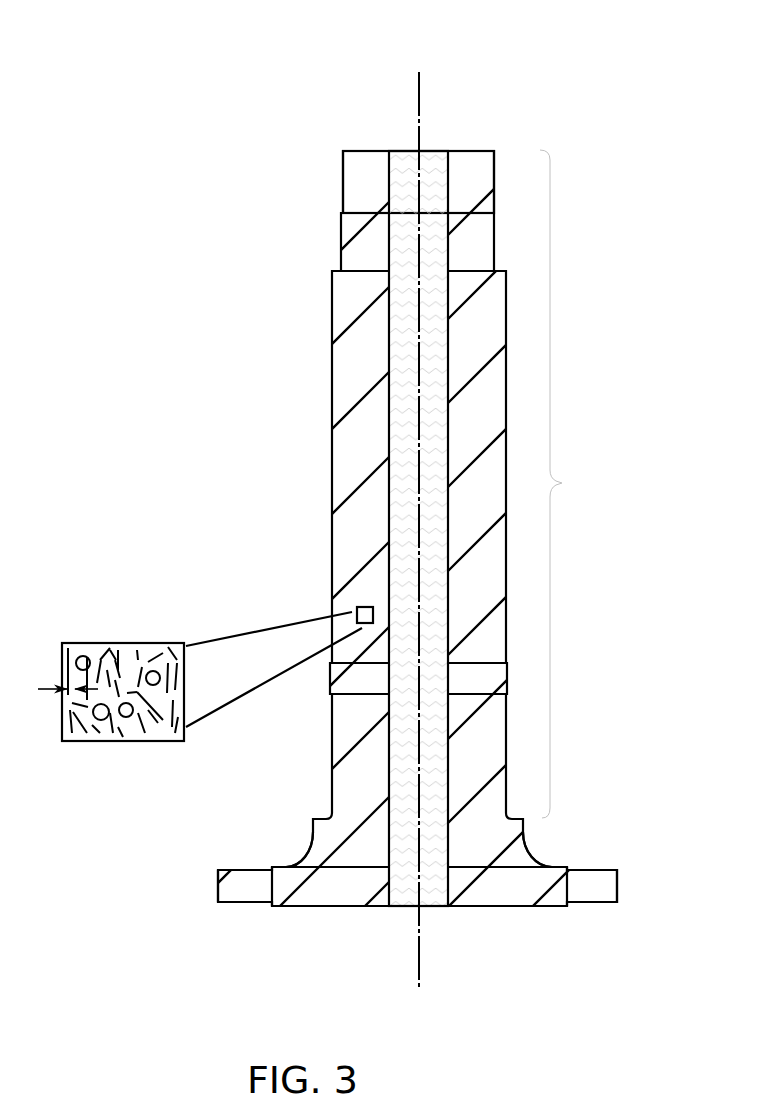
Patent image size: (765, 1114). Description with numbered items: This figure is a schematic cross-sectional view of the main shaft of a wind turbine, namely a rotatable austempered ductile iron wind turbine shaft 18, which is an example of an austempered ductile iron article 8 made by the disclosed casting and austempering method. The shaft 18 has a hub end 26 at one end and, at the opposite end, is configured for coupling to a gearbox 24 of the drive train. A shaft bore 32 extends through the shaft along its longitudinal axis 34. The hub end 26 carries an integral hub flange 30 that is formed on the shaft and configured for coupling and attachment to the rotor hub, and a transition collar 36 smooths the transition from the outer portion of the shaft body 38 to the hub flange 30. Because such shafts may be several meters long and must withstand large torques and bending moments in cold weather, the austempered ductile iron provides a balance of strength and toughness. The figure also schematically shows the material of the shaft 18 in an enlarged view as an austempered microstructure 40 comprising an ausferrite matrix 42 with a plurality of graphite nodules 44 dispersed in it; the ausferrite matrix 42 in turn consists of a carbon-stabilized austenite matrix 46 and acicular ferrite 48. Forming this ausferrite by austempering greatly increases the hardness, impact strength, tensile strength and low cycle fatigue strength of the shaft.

The austempered ductile iron article 8 is at (466, 96).
The austempered ductile iron wind turbine shaft 18 is at (471, 147).
The hub end 26 is at (372, 150).
The shaft bore 32 is at (397, 757).
The longitudinal axis 34 is at (424, 937).
The shaft body 38 is at (567, 484).
The transition collar 36 is at (313, 842).
The gearbox 24 is at (333, 907).
The hub flange 30 is at (218, 878).
The austempered microstructure 40 is at (357, 606).
The ausferrite matrix 42 is at (90, 642).
The graphite nodules 44 is at (130, 742).
The carbon-stabilized austenite matrix 46 is at (97, 742).
The acicular ferrite 48 is at (162, 742).